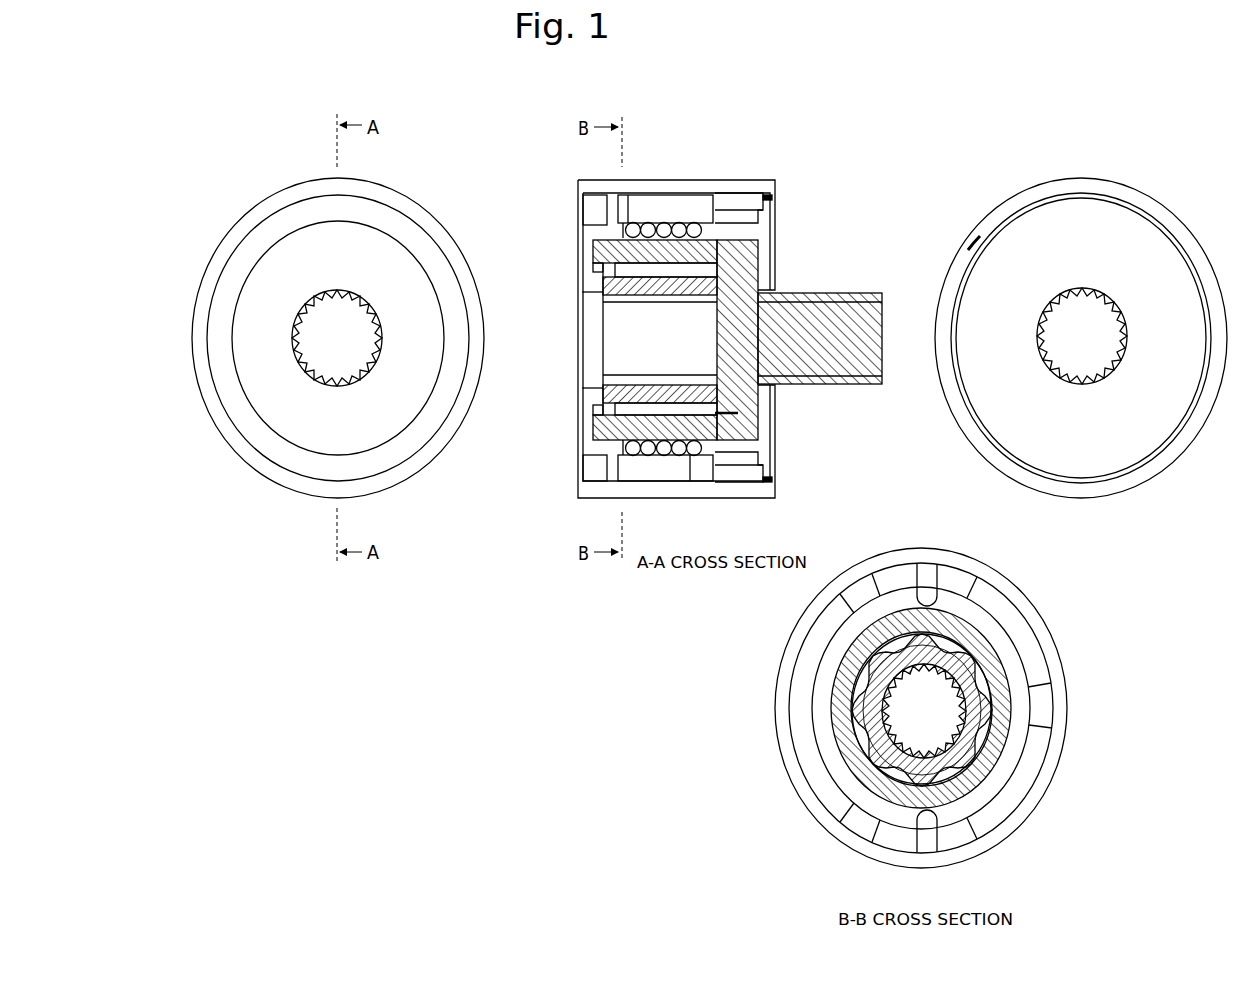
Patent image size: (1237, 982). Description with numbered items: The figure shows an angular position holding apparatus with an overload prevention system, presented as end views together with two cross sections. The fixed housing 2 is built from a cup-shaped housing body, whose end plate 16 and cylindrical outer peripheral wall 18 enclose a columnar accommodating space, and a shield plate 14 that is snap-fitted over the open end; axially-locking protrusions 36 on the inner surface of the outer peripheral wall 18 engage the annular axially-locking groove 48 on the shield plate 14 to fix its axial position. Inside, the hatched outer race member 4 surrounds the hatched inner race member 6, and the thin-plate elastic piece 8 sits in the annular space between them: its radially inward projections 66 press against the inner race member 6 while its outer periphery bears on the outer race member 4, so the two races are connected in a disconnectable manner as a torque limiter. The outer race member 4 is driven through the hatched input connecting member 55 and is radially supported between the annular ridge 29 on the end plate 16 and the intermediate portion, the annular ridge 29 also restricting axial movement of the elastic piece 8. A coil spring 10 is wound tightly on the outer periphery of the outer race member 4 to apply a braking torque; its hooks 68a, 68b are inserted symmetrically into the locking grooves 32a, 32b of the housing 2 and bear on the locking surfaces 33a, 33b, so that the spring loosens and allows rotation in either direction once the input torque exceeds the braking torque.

The housing 2 is at (583, 180).
The outer race member 4 is at (760, 268).
The inner race member 6 is at (601, 313).
The thin-plate elastic piece 8 is at (600, 263).
The coil spring 10 is at (694, 229).
The shield plate 14 is at (1148, 245).
The end plate 16 is at (298, 410).
The outer peripheral wall 18 is at (673, 180).
The annular ridge 29 is at (606, 408).
The locking groove 32a is at (655, 195).
The locking groove 32b is at (658, 466).
The locking surface 33a is at (930, 567).
The locking surface 33b is at (923, 842).
The axially-locking protrusion 36 is at (776, 474).
The axially-locking groove 48 is at (776, 198).
The input connecting member 55 is at (831, 388).
The projection 66 is at (970, 790).
The hook 68a is at (596, 206).
The hook 68b is at (691, 462).